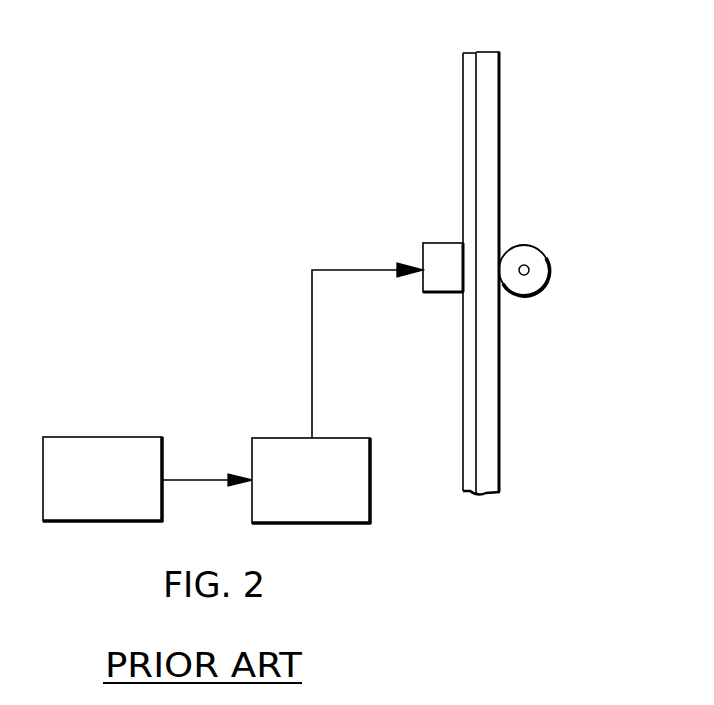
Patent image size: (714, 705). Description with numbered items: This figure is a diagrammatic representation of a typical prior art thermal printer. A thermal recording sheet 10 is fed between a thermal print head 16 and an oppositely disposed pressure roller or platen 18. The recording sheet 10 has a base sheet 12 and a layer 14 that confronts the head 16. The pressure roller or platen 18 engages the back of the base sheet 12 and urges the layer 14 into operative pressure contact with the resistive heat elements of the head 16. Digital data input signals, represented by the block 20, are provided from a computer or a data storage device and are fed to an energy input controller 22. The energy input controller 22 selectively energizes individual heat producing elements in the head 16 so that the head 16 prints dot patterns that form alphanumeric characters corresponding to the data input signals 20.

The thermal recording sheet 10 is at (524, 104).
The base sheet 12 is at (490, 62).
The layer 14 is at (467, 54).
The thermal print head 16 is at (447, 245).
The pressure roller or platen 18 is at (534, 253).
The digital data input signals 20 is at (102, 441).
The energy input controller 22 is at (347, 447).